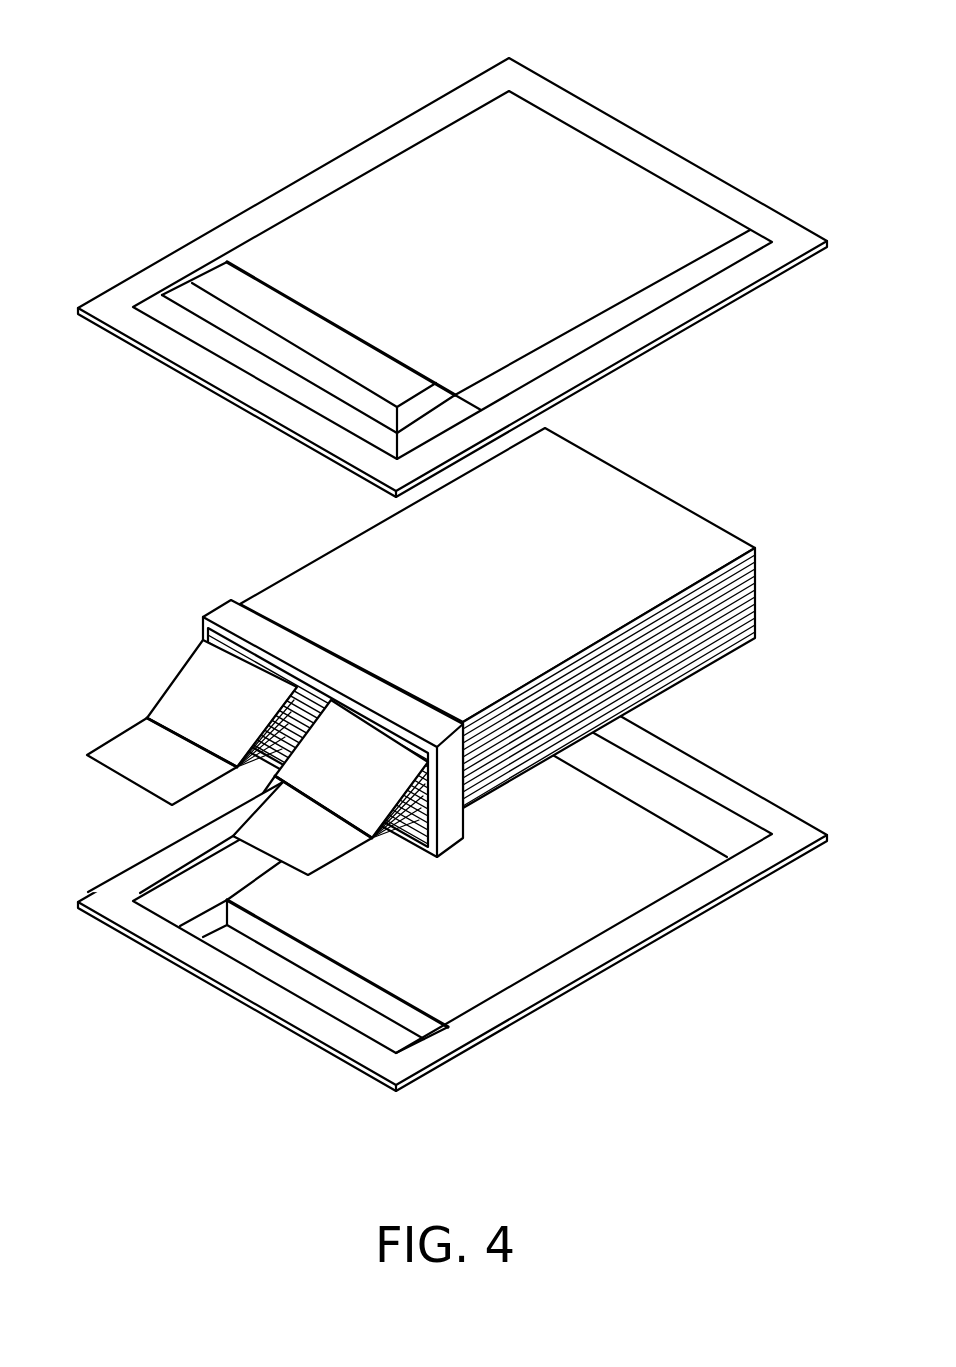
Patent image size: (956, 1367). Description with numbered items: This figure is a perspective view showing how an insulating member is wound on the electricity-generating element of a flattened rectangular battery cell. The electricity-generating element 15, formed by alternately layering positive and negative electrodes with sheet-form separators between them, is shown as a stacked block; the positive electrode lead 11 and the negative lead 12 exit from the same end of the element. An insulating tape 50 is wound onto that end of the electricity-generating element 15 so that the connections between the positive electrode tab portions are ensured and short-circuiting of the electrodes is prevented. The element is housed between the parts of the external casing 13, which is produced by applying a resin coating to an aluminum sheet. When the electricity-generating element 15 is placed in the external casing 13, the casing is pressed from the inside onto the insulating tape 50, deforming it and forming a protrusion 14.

The positive electrode lead 11 is at (247, 825).
The negative lead 12 is at (115, 753).
The external casing 13 is at (503, 80).
The protrusion 14 is at (218, 280).
The electricity-generating element 15 is at (168, 633).
The insulating tape 50 is at (398, 703).